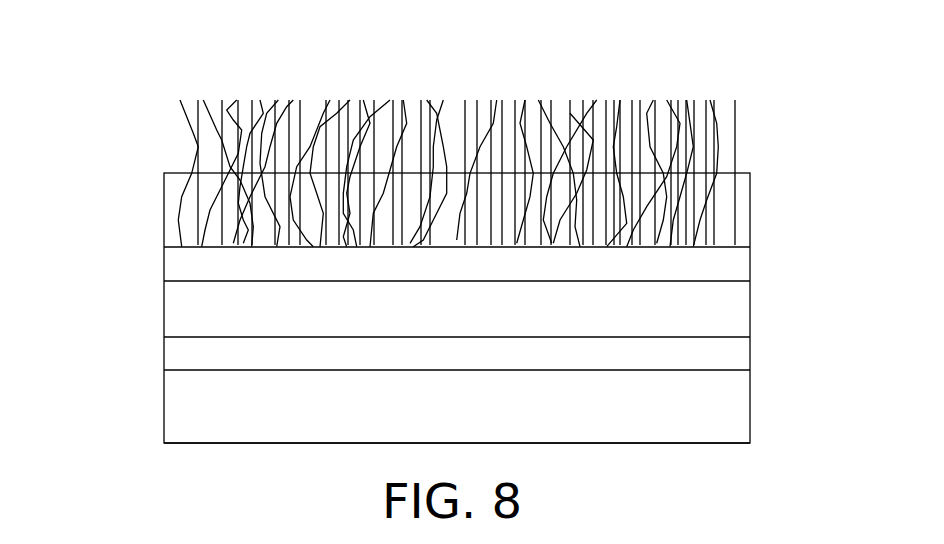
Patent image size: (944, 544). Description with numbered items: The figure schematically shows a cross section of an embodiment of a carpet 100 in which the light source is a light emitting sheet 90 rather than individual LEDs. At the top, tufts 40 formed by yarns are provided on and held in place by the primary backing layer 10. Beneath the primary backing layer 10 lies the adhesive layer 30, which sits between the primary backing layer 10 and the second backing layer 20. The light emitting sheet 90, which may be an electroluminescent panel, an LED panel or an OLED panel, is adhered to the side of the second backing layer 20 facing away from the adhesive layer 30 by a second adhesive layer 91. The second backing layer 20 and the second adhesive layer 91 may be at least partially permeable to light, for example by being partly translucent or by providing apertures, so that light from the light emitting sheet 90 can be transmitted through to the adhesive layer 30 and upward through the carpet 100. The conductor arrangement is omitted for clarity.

The carpet 100 is at (130, 72).
The primary backing layer 10 is at (180, 186).
The tufts 40 is at (560, 100).
The adhesive layer 30 is at (180, 265).
The second backing layer 20 is at (180, 307).
The second adhesive layer 91 is at (180, 353).
The light emitting sheet 90 is at (180, 426).